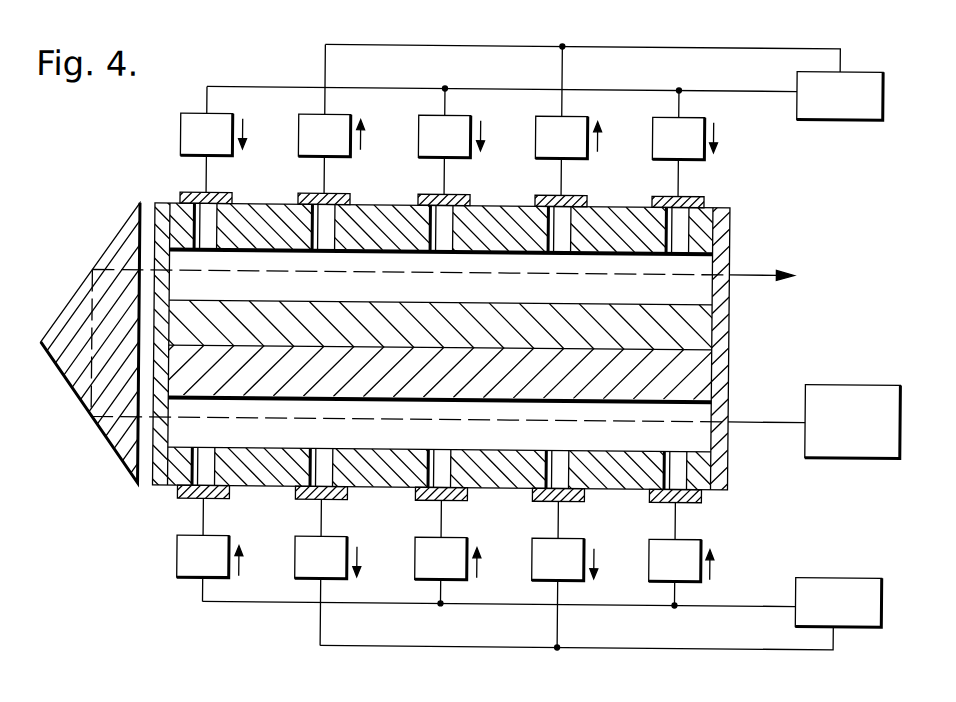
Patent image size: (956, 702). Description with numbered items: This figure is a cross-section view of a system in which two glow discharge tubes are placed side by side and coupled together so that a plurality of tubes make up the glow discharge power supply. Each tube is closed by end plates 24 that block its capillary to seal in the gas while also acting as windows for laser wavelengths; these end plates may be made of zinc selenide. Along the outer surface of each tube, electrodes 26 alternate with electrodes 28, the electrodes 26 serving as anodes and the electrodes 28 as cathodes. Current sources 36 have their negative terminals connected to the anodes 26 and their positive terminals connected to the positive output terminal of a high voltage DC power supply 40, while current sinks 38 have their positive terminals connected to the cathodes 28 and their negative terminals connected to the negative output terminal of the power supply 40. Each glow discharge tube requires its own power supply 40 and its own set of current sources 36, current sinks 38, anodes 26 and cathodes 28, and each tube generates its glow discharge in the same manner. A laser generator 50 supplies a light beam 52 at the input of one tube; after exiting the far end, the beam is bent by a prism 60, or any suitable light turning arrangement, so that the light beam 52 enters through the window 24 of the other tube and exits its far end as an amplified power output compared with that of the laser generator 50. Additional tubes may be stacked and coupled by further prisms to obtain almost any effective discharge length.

The end plate 24 is at (158, 203).
The electrode (anode) 26 is at (232, 194).
The electrode (cathode) 28 is at (350, 194).
The current source 36 is at (186, 118).
The current sink 38 is at (304, 118).
The high voltage DC power supply 40 is at (880, 73).
The laser generator 50 is at (890, 387).
The light beam 52 is at (90, 283).
The prism 60 is at (74, 390).